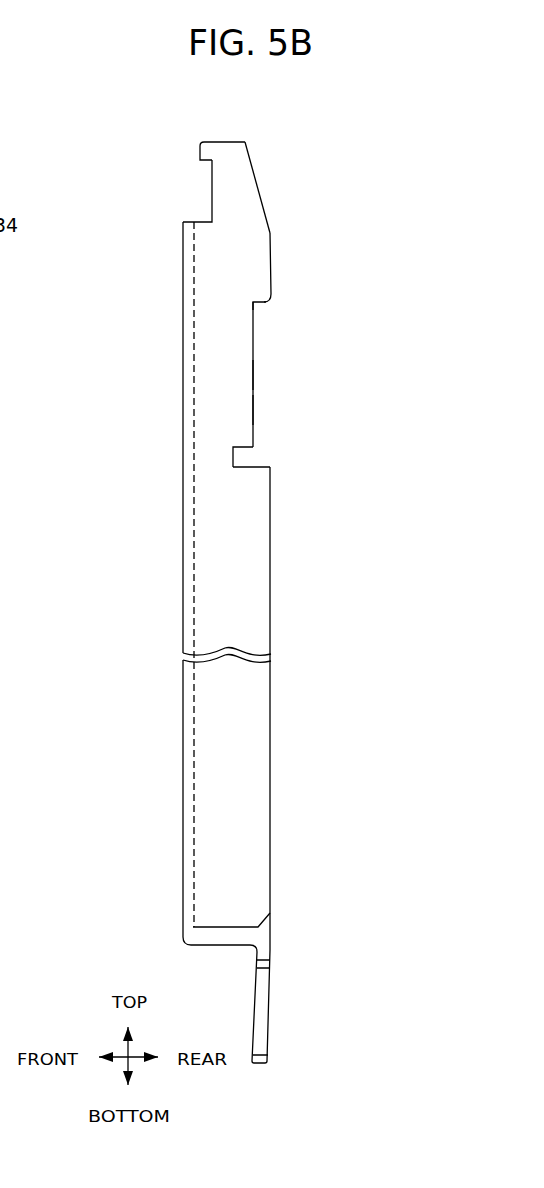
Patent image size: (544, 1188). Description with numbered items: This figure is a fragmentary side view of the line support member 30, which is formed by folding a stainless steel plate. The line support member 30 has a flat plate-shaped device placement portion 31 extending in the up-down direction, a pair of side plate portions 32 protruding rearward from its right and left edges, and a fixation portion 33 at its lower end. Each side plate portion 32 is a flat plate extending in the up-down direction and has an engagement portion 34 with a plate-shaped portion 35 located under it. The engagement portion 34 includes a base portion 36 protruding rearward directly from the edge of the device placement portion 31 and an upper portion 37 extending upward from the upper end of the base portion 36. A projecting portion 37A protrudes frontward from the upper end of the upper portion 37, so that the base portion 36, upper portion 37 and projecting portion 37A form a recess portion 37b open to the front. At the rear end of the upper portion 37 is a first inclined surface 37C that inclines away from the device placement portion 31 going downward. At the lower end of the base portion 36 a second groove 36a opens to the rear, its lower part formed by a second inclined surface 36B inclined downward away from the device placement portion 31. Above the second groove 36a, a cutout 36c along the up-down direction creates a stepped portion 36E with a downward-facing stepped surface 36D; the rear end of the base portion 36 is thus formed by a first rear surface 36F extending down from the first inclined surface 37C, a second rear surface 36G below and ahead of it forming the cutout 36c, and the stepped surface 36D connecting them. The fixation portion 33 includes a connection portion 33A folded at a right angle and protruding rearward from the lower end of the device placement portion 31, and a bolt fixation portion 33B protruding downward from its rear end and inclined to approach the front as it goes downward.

The line support member 30 is at (386, 191).
The device placement portion 31 is at (188, 488).
The side plate portion 32 is at (271, 592).
The fixation portion 33 is at (291, 938).
The connection portion 33A is at (222, 940).
The bolt fixation portion 33B is at (260, 1005).
The engagement portion 34 is at (362, 289).
The plate-shaped portion 35 is at (245, 632).
The base portion 36 is at (208, 367).
The second groove 36a is at (233, 455).
The second inclined surface 36B is at (260, 467).
The cutout 36c is at (253, 375).
The stepped surface 36D is at (258, 303).
The stepped portion 36E is at (290, 326).
The first rear surface 36F is at (272, 263).
The second rear surface 36G is at (253, 410).
The upper portion 37 is at (233, 198).
The projecting portion 37A is at (203, 152).
The recess portion 37b is at (212, 175).
The first inclined surface 37C is at (260, 188).